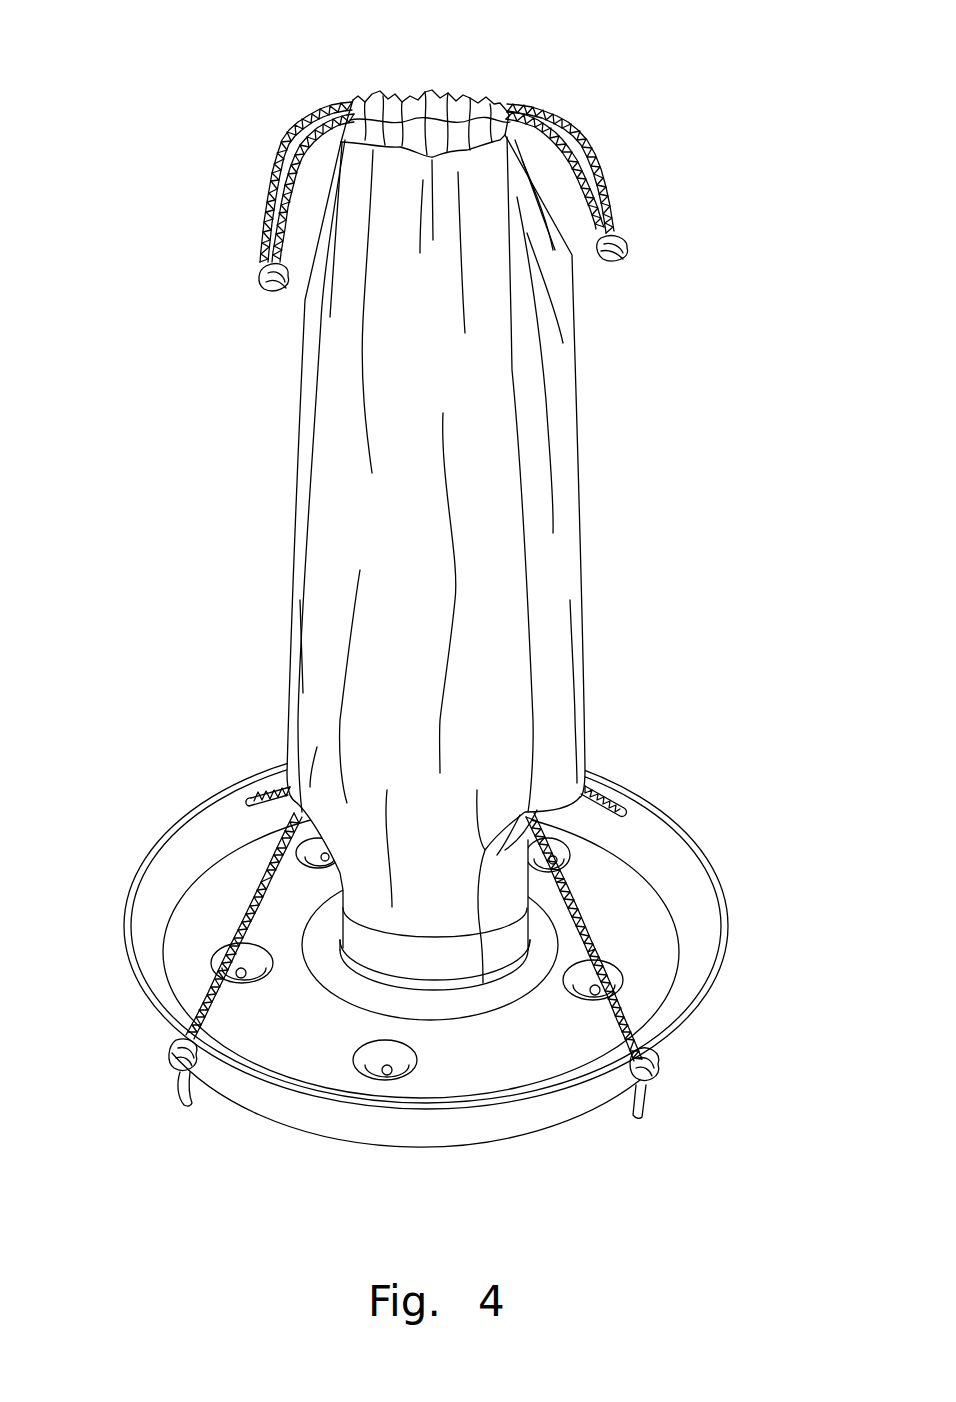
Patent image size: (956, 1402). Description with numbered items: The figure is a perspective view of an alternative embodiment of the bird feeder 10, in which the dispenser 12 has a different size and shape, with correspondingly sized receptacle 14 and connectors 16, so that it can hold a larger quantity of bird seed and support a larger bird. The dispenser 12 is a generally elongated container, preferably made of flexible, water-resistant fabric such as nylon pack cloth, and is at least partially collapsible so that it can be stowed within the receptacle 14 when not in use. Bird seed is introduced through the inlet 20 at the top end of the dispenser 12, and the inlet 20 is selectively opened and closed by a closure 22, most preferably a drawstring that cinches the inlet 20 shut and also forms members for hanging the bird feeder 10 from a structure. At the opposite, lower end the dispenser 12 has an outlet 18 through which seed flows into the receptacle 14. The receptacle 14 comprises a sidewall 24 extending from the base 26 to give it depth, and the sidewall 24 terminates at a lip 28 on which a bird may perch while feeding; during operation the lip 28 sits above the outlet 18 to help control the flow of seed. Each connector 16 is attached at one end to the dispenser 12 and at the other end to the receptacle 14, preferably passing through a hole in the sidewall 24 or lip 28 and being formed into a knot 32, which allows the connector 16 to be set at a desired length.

The bird feeder 10 is at (705, 353).
The dispenser 12 is at (500, 440).
The receptacle 14 is at (620, 894).
The connector 16 is at (245, 942).
The outlet 18 is at (367, 977).
The inlet 20 is at (413, 97).
The closure 22 is at (583, 143).
The sidewall 24 is at (530, 1115).
The base 26 is at (650, 946).
The lip 28 is at (437, 1110).
The knot 32 is at (175, 1050).